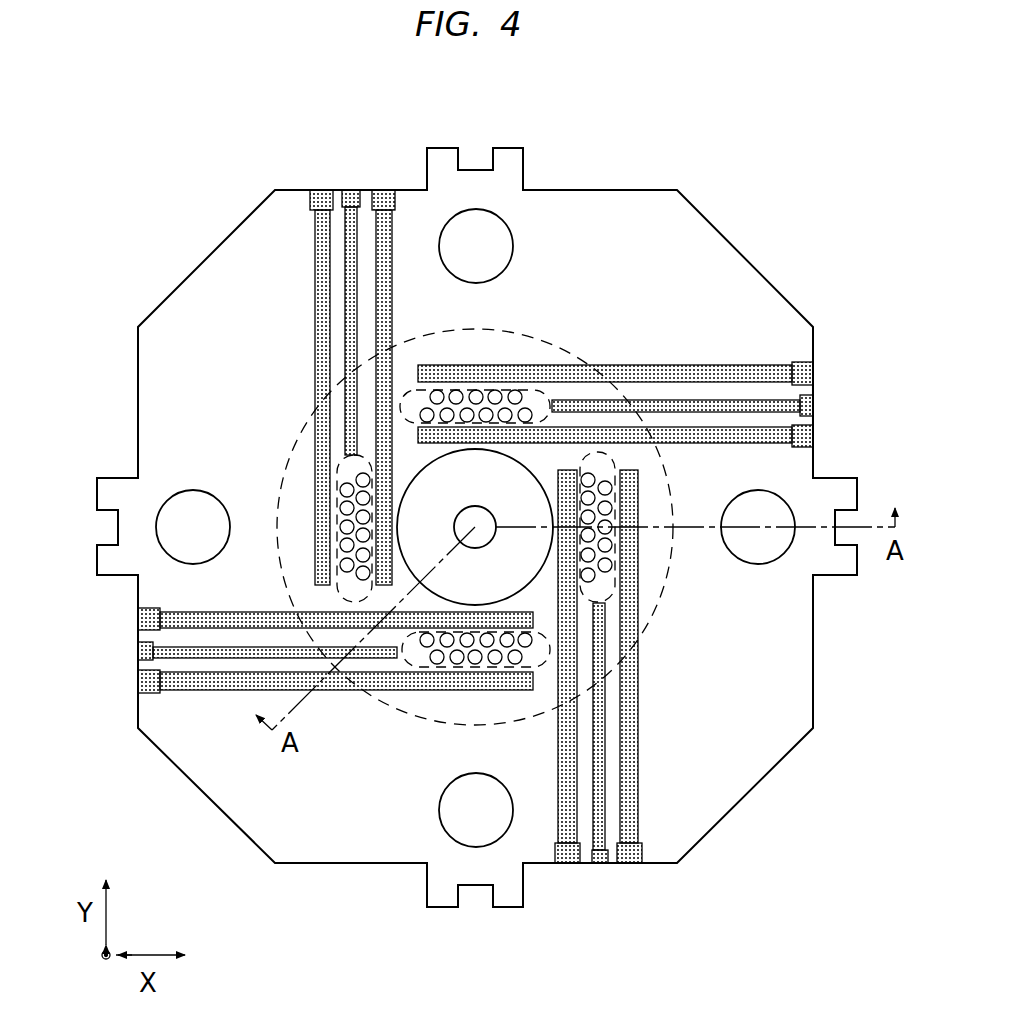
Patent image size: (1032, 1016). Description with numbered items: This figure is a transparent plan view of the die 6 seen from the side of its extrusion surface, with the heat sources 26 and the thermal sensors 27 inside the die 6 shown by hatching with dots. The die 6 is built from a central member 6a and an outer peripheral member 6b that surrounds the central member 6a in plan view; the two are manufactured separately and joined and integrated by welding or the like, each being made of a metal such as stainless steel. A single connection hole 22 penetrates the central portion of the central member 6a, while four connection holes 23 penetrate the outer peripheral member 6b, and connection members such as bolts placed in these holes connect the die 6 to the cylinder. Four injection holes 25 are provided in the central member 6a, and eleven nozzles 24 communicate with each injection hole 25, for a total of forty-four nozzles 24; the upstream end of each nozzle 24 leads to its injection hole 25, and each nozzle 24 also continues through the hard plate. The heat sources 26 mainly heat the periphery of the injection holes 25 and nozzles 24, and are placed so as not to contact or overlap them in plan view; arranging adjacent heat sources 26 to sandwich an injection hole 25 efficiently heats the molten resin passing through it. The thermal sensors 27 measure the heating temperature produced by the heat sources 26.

The die 6 is at (782, 154).
The central member 6a is at (624, 382).
The outer peripheral member 6b is at (711, 320).
The connection hole 22 is at (462, 520).
The connection hole 23 is at (472, 228).
The nozzle 24 is at (515, 397).
The injection hole 25 is at (547, 418).
The heat source 26 is at (320, 200).
The thermal sensor 27 is at (351, 198).